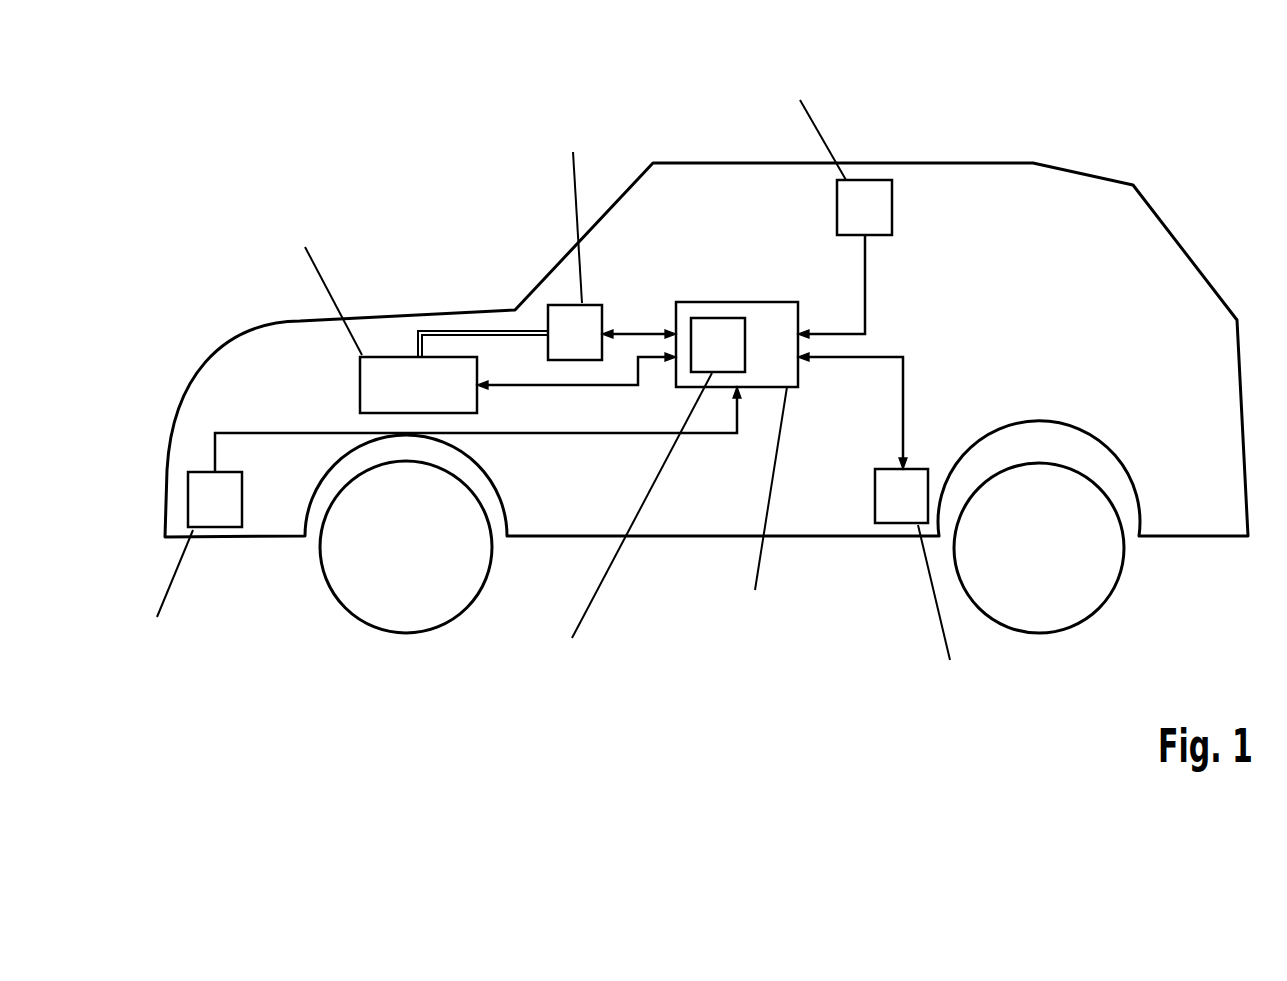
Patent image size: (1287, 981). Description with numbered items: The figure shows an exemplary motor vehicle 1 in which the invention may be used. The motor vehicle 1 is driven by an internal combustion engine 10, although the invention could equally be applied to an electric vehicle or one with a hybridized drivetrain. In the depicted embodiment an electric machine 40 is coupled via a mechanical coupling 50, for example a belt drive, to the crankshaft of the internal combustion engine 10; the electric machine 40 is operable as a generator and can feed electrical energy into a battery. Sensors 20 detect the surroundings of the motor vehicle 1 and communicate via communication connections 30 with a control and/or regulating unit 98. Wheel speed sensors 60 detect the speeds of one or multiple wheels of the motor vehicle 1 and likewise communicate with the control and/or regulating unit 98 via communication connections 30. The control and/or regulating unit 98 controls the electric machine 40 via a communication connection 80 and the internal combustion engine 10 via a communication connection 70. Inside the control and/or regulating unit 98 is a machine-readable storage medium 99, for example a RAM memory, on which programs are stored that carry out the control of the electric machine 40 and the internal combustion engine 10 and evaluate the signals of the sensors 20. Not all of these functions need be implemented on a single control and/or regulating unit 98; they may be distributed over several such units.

The motor vehicle 1 is at (963, 163).
The internal combustion engine 10 is at (373, 357).
The sensors 20 is at (860, 180).
The communication connections 30 is at (638, 433).
The electric machine 40 is at (568, 303).
The mechanical coupling 50 is at (456, 331).
The wheel speed sensors 60 is at (905, 523).
The communication connection 70 is at (615, 388).
The communication connection 80 is at (636, 332).
The control and/or regulating unit 98 is at (762, 302).
The machine-readable storage medium 99 is at (718, 318).